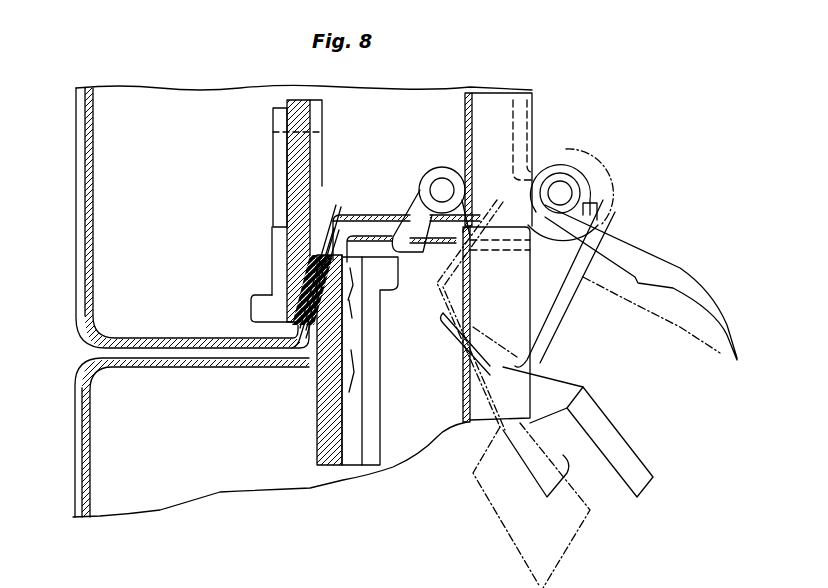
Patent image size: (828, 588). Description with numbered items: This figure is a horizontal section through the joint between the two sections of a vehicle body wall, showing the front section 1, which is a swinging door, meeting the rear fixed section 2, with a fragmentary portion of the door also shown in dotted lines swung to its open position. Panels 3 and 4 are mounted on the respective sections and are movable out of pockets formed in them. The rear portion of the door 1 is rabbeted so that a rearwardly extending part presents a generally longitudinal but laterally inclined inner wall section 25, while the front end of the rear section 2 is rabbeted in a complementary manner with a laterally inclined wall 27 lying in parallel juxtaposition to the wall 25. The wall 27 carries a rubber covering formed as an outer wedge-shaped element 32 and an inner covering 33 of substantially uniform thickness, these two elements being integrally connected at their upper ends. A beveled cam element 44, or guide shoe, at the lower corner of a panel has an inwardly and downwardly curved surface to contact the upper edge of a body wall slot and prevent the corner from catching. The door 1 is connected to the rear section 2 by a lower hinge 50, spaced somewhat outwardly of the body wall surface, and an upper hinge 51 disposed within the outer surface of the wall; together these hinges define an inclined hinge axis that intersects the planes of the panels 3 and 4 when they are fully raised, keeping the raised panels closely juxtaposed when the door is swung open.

The front section 1 is at (76, 421).
The rear fixed section 2 is at (76, 263).
The panel 3 is at (317, 413).
The panel 4 is at (287, 167).
The inner wall section 25 is at (336, 212).
The laterally inclined wall 27 is at (300, 322).
The outer wedge-shaped element 32 is at (307, 332).
The inner covering 33 is at (310, 270).
The cam element 44 is at (381, 320).
The lower hinge 50 is at (562, 173).
The upper hinge 51 is at (440, 170).